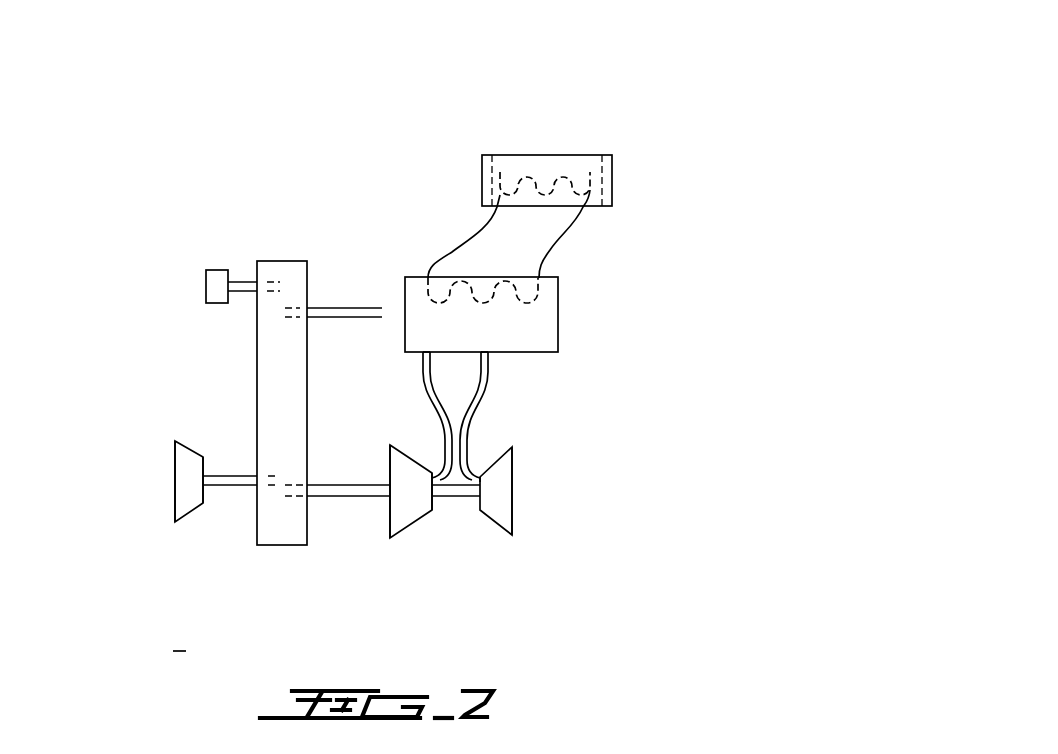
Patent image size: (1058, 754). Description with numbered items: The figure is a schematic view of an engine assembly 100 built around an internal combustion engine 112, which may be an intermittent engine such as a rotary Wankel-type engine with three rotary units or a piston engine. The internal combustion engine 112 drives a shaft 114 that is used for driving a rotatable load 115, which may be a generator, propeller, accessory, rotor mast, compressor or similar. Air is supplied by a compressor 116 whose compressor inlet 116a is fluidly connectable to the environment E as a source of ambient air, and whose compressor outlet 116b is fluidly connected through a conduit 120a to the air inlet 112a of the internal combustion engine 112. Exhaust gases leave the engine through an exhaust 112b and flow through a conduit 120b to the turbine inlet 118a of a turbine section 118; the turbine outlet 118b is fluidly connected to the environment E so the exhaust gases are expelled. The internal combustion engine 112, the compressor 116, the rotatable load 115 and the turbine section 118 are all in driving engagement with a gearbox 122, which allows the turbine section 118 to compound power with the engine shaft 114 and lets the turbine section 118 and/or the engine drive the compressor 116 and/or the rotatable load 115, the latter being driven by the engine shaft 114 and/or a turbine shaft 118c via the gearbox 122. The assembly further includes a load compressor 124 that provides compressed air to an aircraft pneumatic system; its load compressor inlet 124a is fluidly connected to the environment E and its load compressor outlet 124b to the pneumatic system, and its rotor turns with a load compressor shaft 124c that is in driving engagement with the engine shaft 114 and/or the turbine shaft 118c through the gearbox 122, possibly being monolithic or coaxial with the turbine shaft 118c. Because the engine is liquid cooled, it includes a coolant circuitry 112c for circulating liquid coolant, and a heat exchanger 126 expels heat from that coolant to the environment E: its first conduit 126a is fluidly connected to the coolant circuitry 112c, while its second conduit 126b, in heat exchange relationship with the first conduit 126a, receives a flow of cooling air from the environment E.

The engine assembly 100 is at (676, 77).
The internal combustion engine 112 is at (488, 342).
The air inlet 112a is at (411, 357).
The exhaust 112b is at (499, 358).
The coolant circuitry 112c is at (520, 301).
The shaft 114 is at (343, 306).
The rotatable load 115 is at (205, 286).
The compressor 116 is at (398, 552).
The compressor inlet 116a is at (387, 526).
The compressor outlet 116b is at (422, 480).
The turbine section 118 is at (559, 529).
The turbine inlet 118a is at (480, 461).
The turbine outlet 118b is at (515, 523).
The turbine shaft 118c is at (472, 500).
The conduit 120a is at (437, 410).
The conduit 120b is at (490, 396).
The gearbox 122 is at (257, 360).
The load compressor 124 is at (158, 507).
The load compressor inlet 124a is at (175, 454).
The load compressor outlet 124b is at (203, 504).
The load compressor shaft 124c is at (232, 475).
The heat exchanger 126 is at (607, 146).
The first conduit 126a is at (556, 170).
The second conduit 126b is at (495, 165).